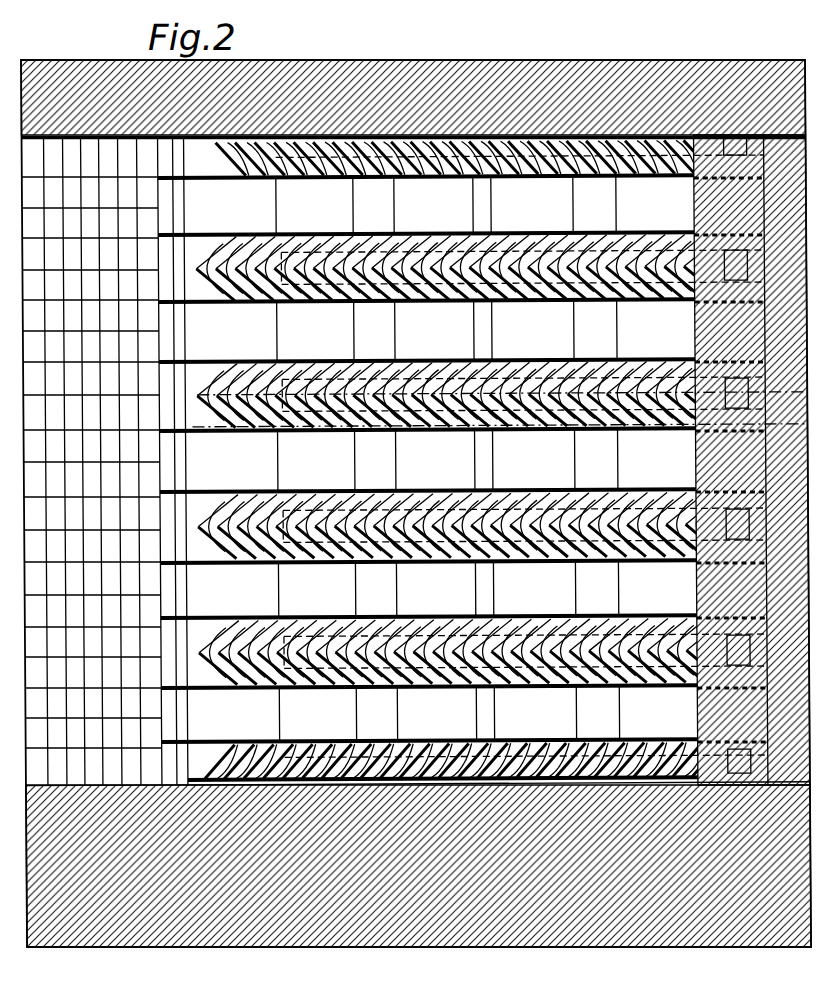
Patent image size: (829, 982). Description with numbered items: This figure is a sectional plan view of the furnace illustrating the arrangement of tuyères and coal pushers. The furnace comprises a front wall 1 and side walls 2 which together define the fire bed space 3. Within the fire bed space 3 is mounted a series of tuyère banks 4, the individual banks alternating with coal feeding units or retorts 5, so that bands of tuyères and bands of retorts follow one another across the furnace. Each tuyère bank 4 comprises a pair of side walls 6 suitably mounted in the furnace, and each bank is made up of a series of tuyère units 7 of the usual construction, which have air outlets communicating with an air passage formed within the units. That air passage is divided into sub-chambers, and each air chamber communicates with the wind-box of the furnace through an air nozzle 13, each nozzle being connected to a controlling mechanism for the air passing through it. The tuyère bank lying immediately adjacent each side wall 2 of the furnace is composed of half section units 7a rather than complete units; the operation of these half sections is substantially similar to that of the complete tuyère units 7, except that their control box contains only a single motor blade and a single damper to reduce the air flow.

The front wall 1 is at (706, 464).
The side wall 2 is at (274, 68).
The fire bed space 3 is at (499, 458).
The tuyère bank 4 is at (332, 240).
The coal feeding unit 5 is at (422, 362).
The side wall of tuyère bank 6 is at (656, 362).
The tuyère unit 7 is at (432, 176).
The half section unit 7a is at (515, 235).
The air nozzle 13 is at (398, 250).